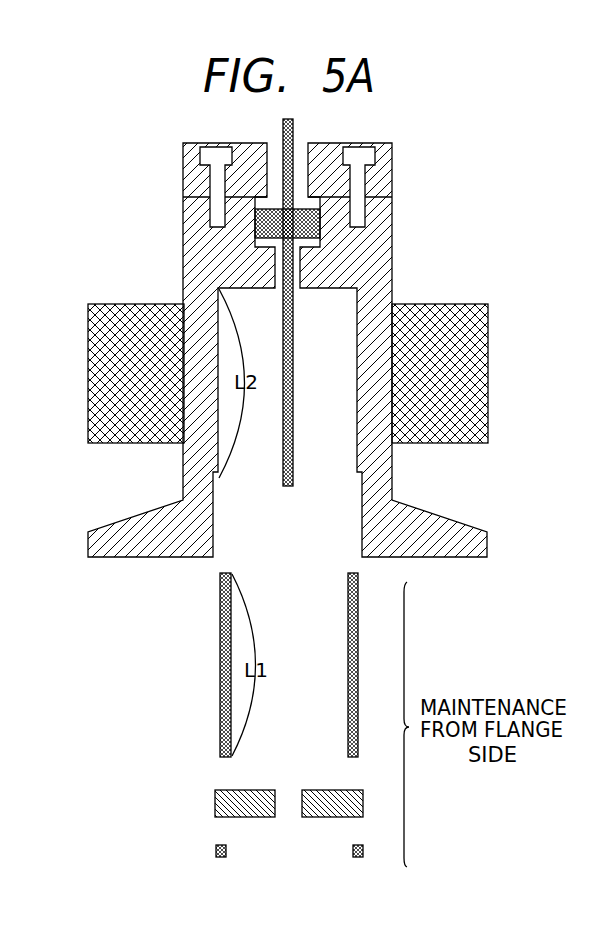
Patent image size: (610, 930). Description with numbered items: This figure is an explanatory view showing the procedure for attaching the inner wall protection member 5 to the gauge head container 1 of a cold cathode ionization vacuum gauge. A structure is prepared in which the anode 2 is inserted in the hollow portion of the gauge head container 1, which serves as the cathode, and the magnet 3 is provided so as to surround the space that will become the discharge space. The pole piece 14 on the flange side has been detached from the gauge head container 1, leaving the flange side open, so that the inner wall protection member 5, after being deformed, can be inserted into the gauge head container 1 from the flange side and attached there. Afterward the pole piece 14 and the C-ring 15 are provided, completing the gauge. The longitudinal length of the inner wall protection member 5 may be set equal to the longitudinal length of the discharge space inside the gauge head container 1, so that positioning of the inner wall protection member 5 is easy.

The gauge head container 1 is at (88, 543).
The anode 2 is at (283, 478).
The magnet 3 is at (88, 380).
The inner wall protection member 5 is at (220, 668).
The pole piece 14 is at (215, 800).
The C-ring 15 is at (216, 851).